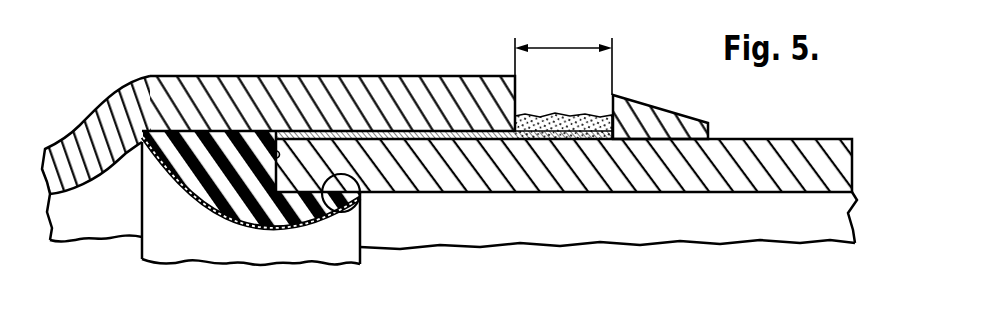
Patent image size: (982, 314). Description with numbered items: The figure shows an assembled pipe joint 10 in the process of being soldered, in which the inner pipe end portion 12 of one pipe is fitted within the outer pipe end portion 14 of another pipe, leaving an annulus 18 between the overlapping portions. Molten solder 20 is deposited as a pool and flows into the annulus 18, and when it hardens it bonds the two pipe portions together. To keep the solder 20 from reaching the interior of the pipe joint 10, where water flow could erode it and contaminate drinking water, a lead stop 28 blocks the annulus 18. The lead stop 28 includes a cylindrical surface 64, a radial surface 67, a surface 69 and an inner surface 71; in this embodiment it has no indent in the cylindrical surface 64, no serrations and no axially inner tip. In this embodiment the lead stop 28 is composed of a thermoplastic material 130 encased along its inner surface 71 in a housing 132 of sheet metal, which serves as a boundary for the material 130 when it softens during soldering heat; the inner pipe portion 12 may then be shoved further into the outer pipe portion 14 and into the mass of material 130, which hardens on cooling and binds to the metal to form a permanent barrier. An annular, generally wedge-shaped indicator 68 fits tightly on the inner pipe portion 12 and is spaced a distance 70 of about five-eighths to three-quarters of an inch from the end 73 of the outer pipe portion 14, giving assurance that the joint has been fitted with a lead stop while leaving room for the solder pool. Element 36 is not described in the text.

The pipe joint 10 is at (331, 63).
The inner pipe end portion 12 is at (800, 139).
The outer pipe end portion 14 is at (404, 76).
The annulus 18 is at (452, 134).
The molten solder 20 is at (567, 130).
The lead stop 28 is at (360, 230).
The fiber bundle 36 is at (214, 213).
The cylindrical surface 64 is at (358, 196).
The radial surface 67 is at (196, 190).
The annular indicator 68 is at (663, 117).
The surface 69 is at (190, 162).
The distance 70 is at (568, 47).
The inner surface 71 is at (270, 224).
The end of outer pipe portion 73 is at (536, 125).
The thermoplastic material 130 is at (162, 143).
The housing 132 is at (235, 214).